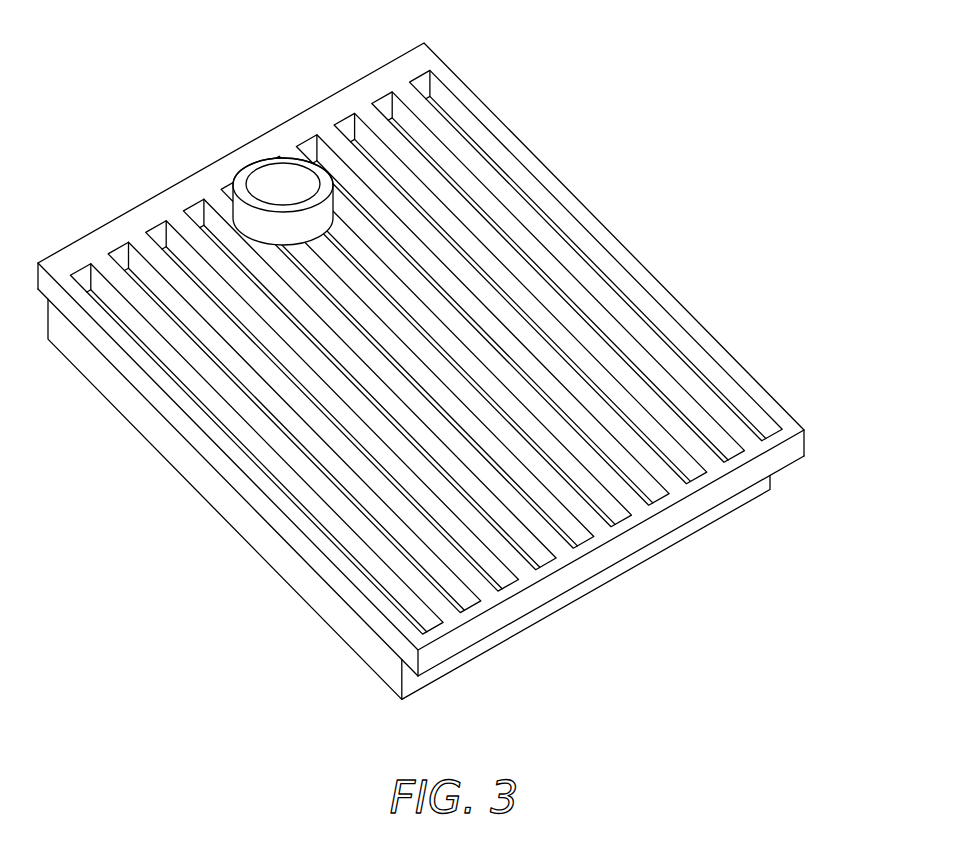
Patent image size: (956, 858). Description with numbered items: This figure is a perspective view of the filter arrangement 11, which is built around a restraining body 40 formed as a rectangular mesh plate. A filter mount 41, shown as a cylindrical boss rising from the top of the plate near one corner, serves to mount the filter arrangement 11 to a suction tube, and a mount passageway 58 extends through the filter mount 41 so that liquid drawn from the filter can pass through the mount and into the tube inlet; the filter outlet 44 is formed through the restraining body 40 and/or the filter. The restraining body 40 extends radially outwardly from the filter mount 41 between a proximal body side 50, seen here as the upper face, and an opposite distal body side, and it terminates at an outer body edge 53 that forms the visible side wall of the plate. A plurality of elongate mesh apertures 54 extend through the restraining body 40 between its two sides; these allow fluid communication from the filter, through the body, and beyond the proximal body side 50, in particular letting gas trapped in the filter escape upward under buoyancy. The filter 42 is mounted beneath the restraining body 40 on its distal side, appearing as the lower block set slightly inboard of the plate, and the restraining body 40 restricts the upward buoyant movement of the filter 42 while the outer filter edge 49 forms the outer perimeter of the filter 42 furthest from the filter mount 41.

The filter arrangement 11 is at (696, 228).
The restraining body 40 is at (577, 197).
The filter mount 41 is at (240, 170).
The filter 42 is at (283, 575).
The filter outlet 44 is at (303, 188).
The outer filter edge 49 is at (415, 686).
The proximal body side 50 is at (409, 62).
The outer body edge 53 is at (797, 447).
The mesh apertures 54 is at (583, 358).
The mount passageway 58 is at (268, 182).